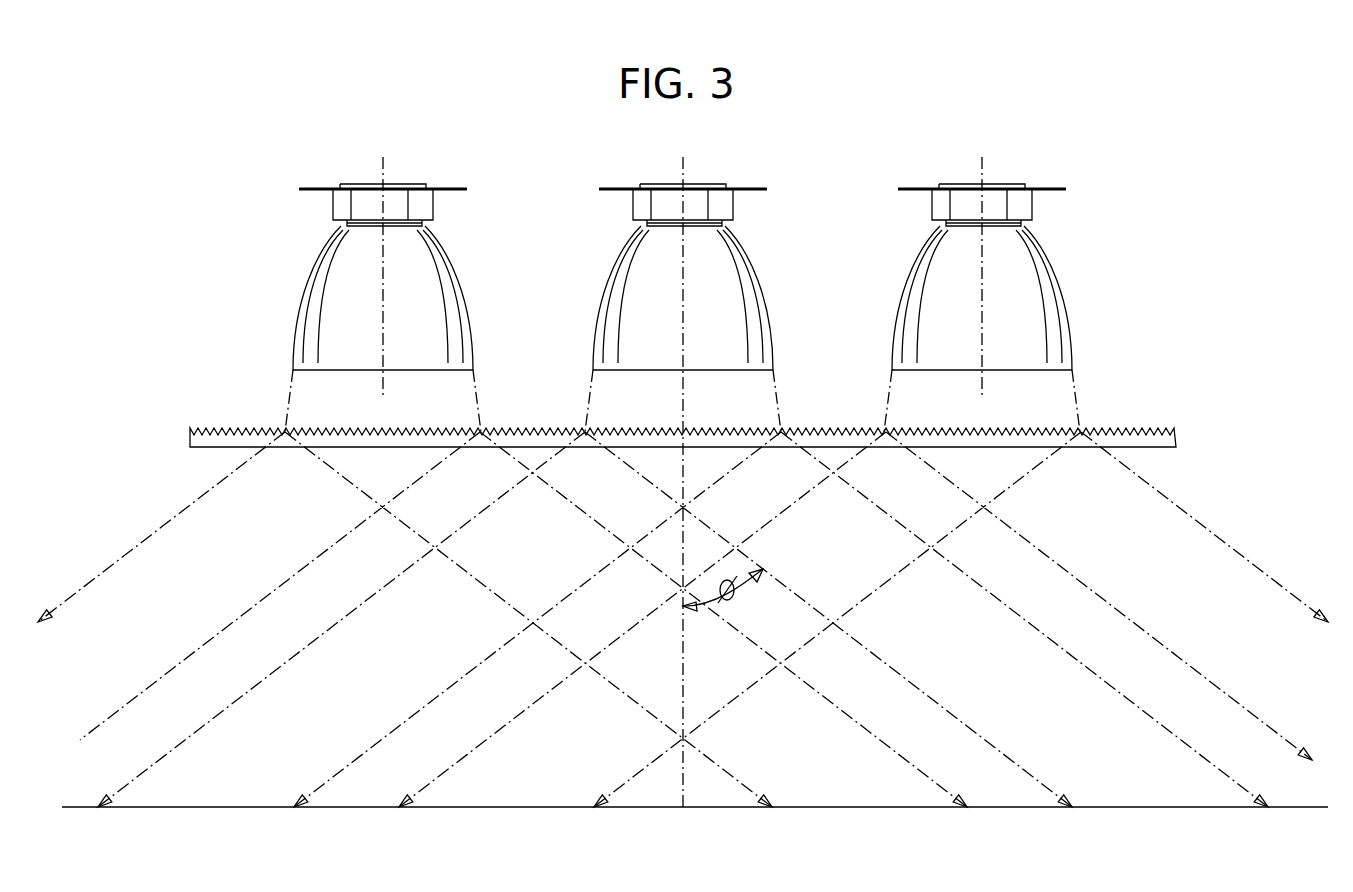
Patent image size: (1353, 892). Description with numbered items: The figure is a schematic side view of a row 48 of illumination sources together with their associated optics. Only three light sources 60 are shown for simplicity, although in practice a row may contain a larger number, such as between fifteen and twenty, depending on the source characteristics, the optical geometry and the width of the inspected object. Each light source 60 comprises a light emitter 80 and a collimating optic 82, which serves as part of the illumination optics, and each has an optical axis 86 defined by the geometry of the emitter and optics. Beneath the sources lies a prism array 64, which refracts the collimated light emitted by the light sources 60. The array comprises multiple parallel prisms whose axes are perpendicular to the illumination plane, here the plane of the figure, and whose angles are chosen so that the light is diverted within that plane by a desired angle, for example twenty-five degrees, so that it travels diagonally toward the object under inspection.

The row 48 is at (265, 133).
The light source 60 is at (273, 188).
The prism array 64 is at (815, 431).
The light emitter 80 is at (638, 203).
The collimating optic 82 is at (613, 303).
The optical axis 86 is at (682, 535).